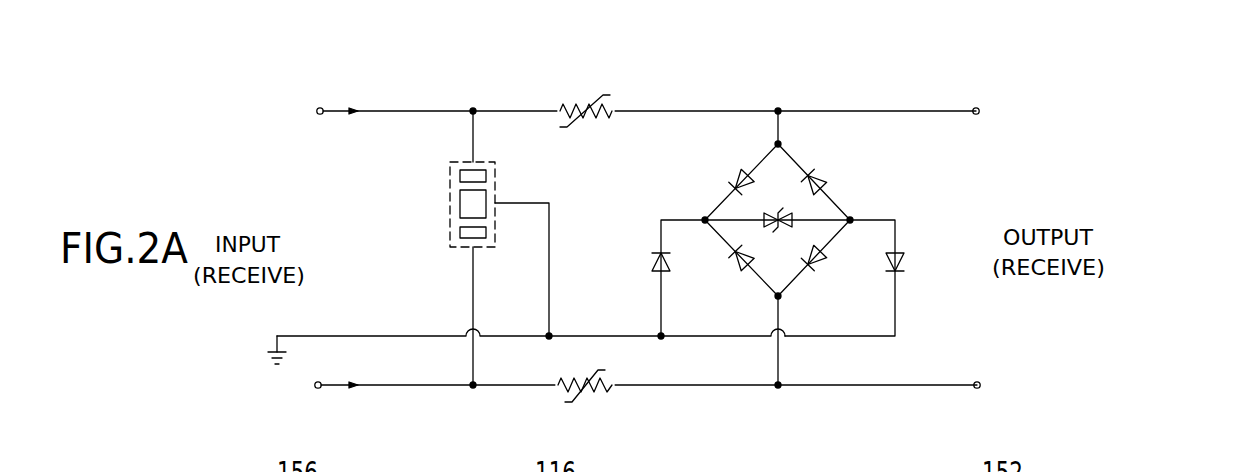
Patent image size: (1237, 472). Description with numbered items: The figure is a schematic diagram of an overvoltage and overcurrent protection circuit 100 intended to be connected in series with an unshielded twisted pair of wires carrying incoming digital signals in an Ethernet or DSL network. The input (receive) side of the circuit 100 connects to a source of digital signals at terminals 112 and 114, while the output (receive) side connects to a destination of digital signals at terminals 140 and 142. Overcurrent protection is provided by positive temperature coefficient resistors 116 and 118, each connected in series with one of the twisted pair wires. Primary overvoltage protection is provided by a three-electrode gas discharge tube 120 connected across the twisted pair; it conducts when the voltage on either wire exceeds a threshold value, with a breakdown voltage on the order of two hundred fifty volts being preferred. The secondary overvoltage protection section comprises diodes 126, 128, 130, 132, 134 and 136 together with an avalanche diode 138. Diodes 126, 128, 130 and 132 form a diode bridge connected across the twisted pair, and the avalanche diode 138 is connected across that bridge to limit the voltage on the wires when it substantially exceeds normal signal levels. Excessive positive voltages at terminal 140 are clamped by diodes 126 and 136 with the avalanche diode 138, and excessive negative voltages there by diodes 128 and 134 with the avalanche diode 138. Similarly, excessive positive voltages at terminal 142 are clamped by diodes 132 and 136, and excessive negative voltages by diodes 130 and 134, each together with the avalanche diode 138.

The overvoltage and overcurrent protection circuit 100 is at (1110, 155).
The terminal 112 is at (317, 106).
The terminal 114 is at (315, 392).
The positive temperature coefficient resistor 116 is at (588, 103).
The positive temperature coefficient resistor 118 is at (582, 391).
The three-electrode gas discharge tube 120 is at (447, 209).
The diode 126 is at (736, 173).
The diode 128 is at (823, 172).
The diode 130 is at (822, 273).
The diode 132 is at (735, 273).
The diode 134 is at (654, 273).
The diode 136 is at (902, 264).
The avalanche diode 138 is at (781, 234).
The terminal 140 is at (979, 106).
The terminal 142 is at (982, 389).